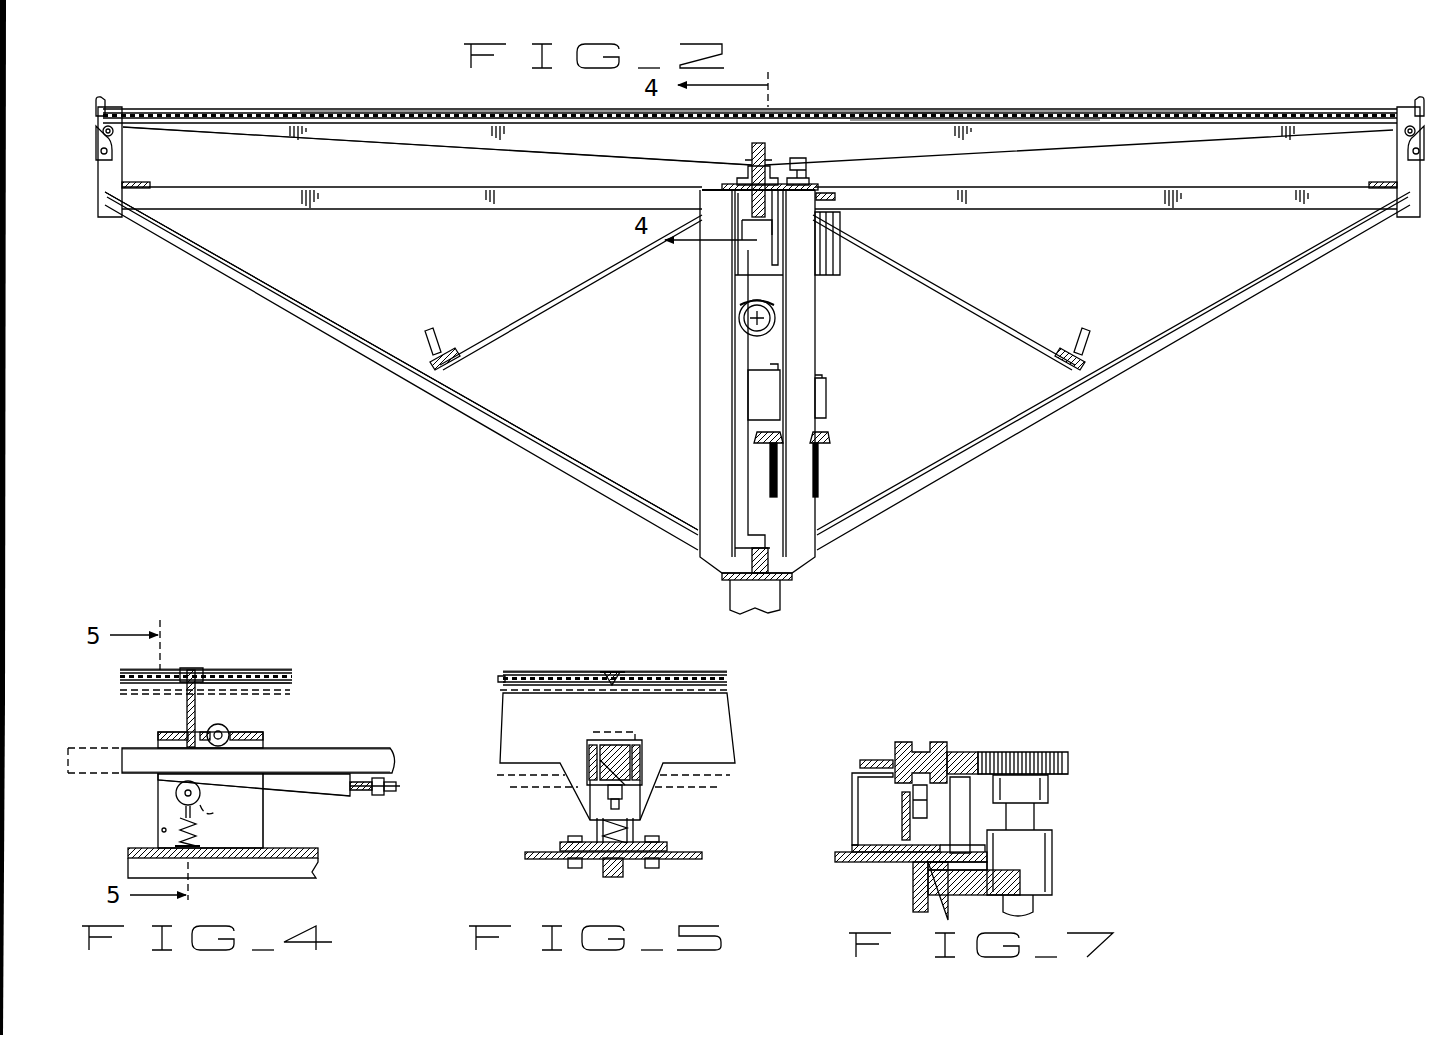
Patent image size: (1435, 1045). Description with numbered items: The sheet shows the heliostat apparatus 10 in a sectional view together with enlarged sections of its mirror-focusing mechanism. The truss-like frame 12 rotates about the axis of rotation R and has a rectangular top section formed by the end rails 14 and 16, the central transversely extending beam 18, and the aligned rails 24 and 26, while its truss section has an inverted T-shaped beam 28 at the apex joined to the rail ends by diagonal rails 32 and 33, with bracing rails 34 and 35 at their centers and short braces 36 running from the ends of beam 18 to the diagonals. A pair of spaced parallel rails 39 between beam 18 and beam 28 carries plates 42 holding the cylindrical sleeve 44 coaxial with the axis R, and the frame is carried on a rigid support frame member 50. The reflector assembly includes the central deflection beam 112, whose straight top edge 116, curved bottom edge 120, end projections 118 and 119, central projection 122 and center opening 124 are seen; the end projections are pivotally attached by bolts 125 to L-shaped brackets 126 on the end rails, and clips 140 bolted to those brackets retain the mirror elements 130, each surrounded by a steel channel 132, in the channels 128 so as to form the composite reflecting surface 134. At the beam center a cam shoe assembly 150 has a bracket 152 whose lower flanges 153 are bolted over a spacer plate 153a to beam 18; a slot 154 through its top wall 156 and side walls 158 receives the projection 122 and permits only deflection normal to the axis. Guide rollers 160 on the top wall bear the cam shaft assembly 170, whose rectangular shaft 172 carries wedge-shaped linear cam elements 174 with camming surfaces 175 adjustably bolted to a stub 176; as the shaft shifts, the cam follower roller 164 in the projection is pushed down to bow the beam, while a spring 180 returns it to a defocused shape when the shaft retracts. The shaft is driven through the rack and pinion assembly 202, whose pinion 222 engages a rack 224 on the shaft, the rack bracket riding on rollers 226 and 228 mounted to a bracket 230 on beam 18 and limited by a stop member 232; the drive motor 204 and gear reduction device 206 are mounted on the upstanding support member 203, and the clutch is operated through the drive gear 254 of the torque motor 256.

In FIG. 2, the heliostat apparatus 10 is at (230, 314).
In FIG. 2, the truss-like frame 12 is at (178, 262).
In FIG. 2, the transversely extending rail 14 is at (104, 220).
In FIG. 2, the transversely extending rail 16 is at (1410, 220).
In FIG. 2, the central transversely extending beam 18 is at (748, 188).
In FIG. 4, the central transversely extending beam 18 is at (130, 862).
In FIG. 5, the central transversely extending beam 18 is at (614, 870).
In FIG. 7, the central transversely extending beam 18 is at (914, 884).
In FIG. 2, the aligned rail 24 is at (366, 206).
In FIG. 2, the aligned rail 26 is at (1164, 208).
In FIG. 2, the inverted T-shaped beam 28 is at (722, 576).
In FIG. 2, the diagonally extending rail 32 is at (408, 360).
In FIG. 2, the diagonally extending rail 33 is at (1186, 324).
In FIG. 2, the bracing rail 34 is at (426, 328).
In FIG. 2, the bracing rail 35 is at (1090, 326).
In FIG. 2, the short brace 36 is at (582, 292).
In FIG. 2, the pair of spaced parallel rails 39 is at (700, 343).
In FIG. 2, the plate 42 is at (775, 351).
In FIG. 2, the cylindrical sleeve 44 is at (745, 320).
In FIG. 2, the rigid support frame member 50 is at (782, 584).
In FIG. 2, the central deflection beam 112 is at (988, 146).
In FIG. 4, the central deflection beam 112 is at (180, 692).
In FIG. 5, the central deflection beam 112 is at (722, 702).
In FIG. 2, the top edge 116 is at (178, 108).
In FIG. 2, the end projection 118 is at (114, 138).
In FIG. 2, the end projection 119 is at (1400, 138).
In FIG. 2, the bottom edge 120 is at (370, 140).
In FIG. 2, the central projection 122 is at (748, 162).
In FIG. 4, the central projection 122 is at (205, 694).
In FIG. 5, the central projection 122 is at (648, 804).
In FIG. 4, the center opening 124 is at (158, 738).
In FIG. 5, the center opening 124 is at (645, 748).
In FIG. 2, the bolt 125 is at (118, 131).
In FIG. 2, the L-shaped bracket 126 is at (120, 168).
In FIG. 2, the channel 128 is at (900, 108).
In FIG. 4, the channel 128 is at (200, 668).
In FIG. 5, the channel 128 is at (554, 672).
In FIG. 2, the mirror element 130 is at (238, 108).
In FIG. 4, the mirror element 130 is at (295, 688).
In FIG. 5, the mirror element 130 is at (730, 690).
In FIG. 4, the steel channel 132 is at (250, 680).
In FIG. 5, the steel channel 132 is at (616, 672).
In FIG. 2, the composite reflecting surface 134 is at (990, 108).
In FIG. 4, the composite reflecting surface 134 is at (232, 670).
In FIG. 5, the composite reflecting surface 134 is at (532, 672).
In FIG. 2, the clip 140 is at (97, 108).
In FIG. 2, the cam shoe assembly 150 is at (772, 138).
In FIG. 4, the cam shoe assembly 150 is at (150, 780).
In FIG. 5, the cam shoe assembly 150 is at (650, 836).
In FIG. 2, the bracket 152 is at (772, 144).
In FIG. 4, the bracket 152 is at (255, 804).
In FIG. 5, the bracket 152 is at (636, 830).
In FIG. 5, the lower flange 153 is at (560, 843).
In FIG. 4, the spacer plate 153a is at (180, 846).
In FIG. 5, the spacer plate 153a is at (560, 852).
In FIG. 4, the slot 154 is at (200, 830).
In FIG. 5, the slot 154 is at (604, 830).
In FIG. 4, the top wall 156 is at (270, 738).
In FIG. 4, the side wall 158 is at (165, 736).
In FIG. 5, the side wall 158 is at (570, 790).
In FIG. 4, the guide roller 160 is at (228, 728).
In FIG. 5, the guide roller 160 is at (622, 730).
In FIG. 4, the cam follower roller 164 is at (200, 794).
In FIG. 5, the cam follower roller 164 is at (600, 798).
In FIG. 2, the cam shaft assembly 170 is at (750, 140).
In FIG. 4, the cam shaft assembly 170 is at (352, 748).
In FIG. 5, the cam shaft assembly 170 is at (598, 748).
In FIG. 2, the rectangular shaft 172 is at (804, 154).
In FIG. 4, the rectangular shaft 172 is at (372, 752).
In FIG. 5, the rectangular shaft 172 is at (640, 748).
In FIG. 7, the rectangular shaft 172 is at (918, 742).
In FIG. 4, the linear cam element 174 is at (318, 800).
In FIG. 5, the linear cam element 174 is at (604, 775).
In FIG. 4, the linear camming surface 175 is at (322, 792).
In FIG. 4, the stub 176 is at (388, 788).
In FIG. 4, the spring 180 is at (186, 824).
In FIG. 5, the spring 180 is at (600, 828).
In FIG. 7, the rack and pinion assembly 202 is at (990, 744).
In FIG. 2, the upstanding support member 203 is at (748, 428).
In FIG. 7, the upstanding support member 203 is at (940, 904).
In FIG. 2, the drive motor 204 is at (822, 447).
In FIG. 2, the gear reduction device 206 is at (822, 384).
In FIG. 7, the pinion 222 is at (1070, 774).
In FIG. 7, the rack 224 is at (962, 752).
In FIG. 7, the roller 226 is at (902, 804).
In FIG. 7, the roller 228 is at (872, 764).
In FIG. 7, the bracket 230 is at (858, 846).
In FIG. 7, the stop member 232 is at (1000, 810).
In FIG. 2, the drive gear 254 is at (836, 200).
In FIG. 2, the torque motor 256 is at (842, 228).
In FIG. 2, the axis of rotation R is at (762, 316).